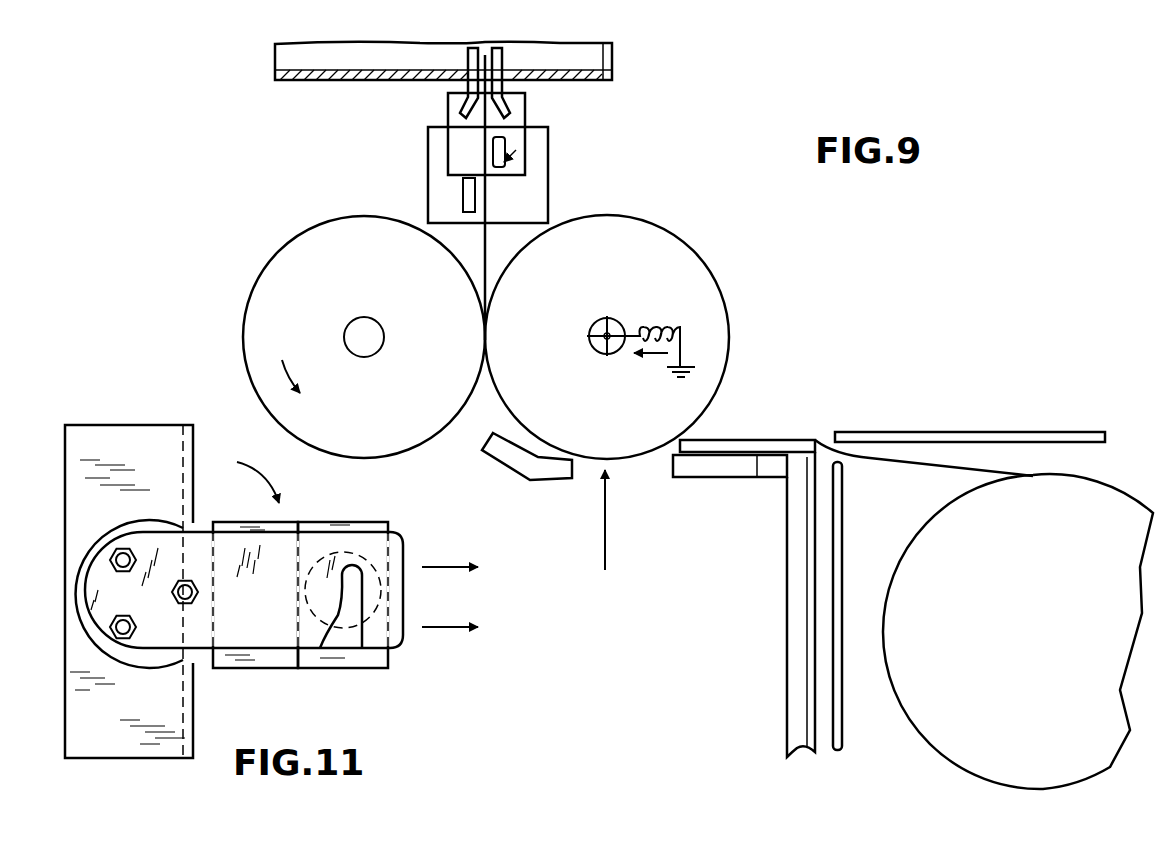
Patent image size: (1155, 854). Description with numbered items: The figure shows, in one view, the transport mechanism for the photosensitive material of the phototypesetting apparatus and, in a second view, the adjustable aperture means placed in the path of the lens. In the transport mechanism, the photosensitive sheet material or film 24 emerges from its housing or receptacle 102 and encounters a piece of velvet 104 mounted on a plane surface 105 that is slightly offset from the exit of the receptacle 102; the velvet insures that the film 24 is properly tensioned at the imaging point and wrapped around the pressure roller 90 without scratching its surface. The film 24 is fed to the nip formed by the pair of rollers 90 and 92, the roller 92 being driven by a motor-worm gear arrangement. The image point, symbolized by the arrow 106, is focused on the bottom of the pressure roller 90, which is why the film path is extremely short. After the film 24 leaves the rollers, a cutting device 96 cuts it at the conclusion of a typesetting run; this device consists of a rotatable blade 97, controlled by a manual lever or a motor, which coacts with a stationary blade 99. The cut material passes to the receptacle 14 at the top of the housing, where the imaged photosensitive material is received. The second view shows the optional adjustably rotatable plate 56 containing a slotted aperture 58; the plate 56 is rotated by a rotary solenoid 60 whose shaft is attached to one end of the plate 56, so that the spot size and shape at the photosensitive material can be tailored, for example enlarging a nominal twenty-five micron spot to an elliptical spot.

In FIG. 9, the receptacle 14 is at (612, 70).
In FIG. 9, the cutting device 96 is at (428, 170).
In FIG. 9, the rotatable blade 97 is at (498, 168).
In FIG. 9, the stationary blade 99 is at (463, 200).
In FIG. 9, the roller 92 is at (255, 280).
In FIG. 9, the pressure roller 90 is at (715, 282).
In FIG. 9, the arrow 106 is at (607, 532).
In FIG. 9, the piece of velvet 104 is at (737, 447).
In FIG. 9, the plane surface 105 is at (757, 460).
In FIG. 9, the receptacle 102 is at (940, 432).
In FIG. 9, the photosensitive sheet material or film 24 is at (927, 466).
In FIG. 11, the rotary solenoid 60 is at (128, 425).
In FIG. 11, the adjustably rotatable plate 56 is at (405, 548).
In FIG. 11, the slotted aperture 58 is at (342, 648).